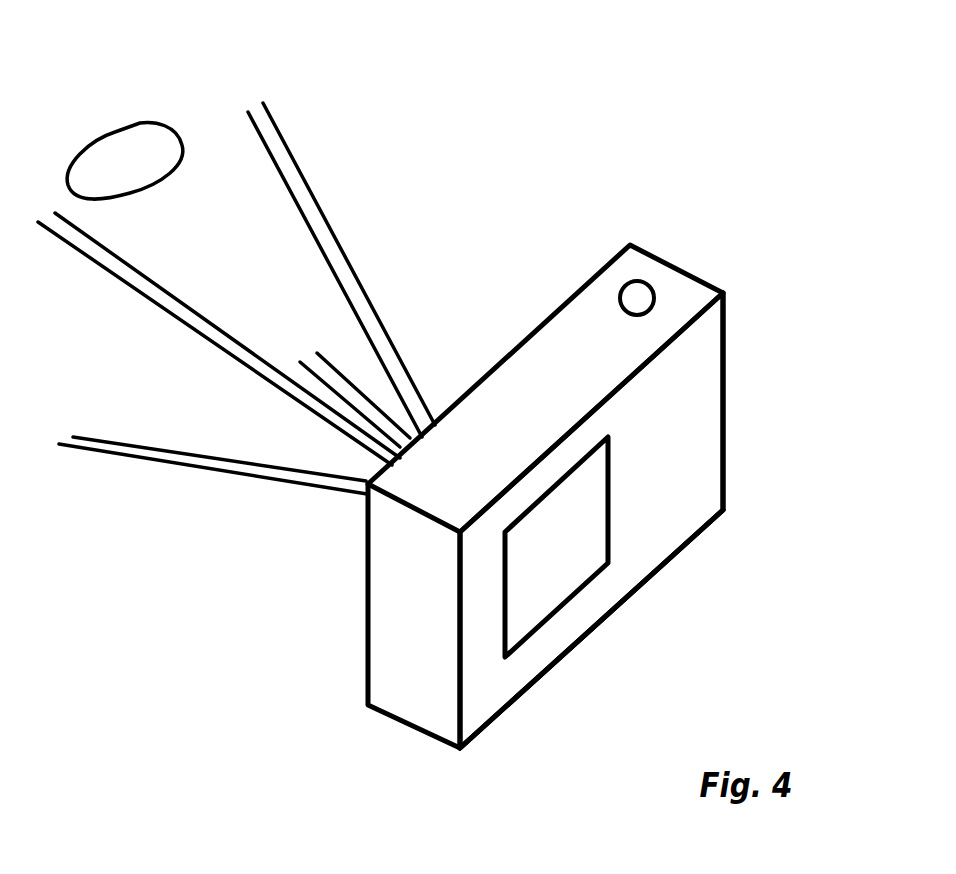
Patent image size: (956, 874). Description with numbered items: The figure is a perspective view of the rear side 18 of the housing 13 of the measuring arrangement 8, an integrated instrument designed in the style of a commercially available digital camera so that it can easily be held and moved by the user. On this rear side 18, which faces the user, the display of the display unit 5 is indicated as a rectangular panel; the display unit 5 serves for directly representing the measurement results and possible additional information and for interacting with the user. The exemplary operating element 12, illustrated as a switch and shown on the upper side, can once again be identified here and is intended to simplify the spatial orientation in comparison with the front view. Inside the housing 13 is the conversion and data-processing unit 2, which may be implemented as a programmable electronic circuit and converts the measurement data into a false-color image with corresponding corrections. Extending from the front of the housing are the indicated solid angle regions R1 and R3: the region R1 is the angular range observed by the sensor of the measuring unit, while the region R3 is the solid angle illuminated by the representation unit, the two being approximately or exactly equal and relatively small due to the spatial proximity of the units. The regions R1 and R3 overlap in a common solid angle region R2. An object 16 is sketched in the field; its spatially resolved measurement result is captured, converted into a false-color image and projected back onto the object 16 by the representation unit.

The conversion and data-processing unit 2 is at (605, 496).
The display unit 5 is at (567, 573).
The measuring arrangement 8 is at (653, 112).
The operating element 12 is at (645, 292).
The housing 13 is at (480, 710).
The object 16 is at (127, 148).
The rear side 18 is at (692, 524).
The solid angle region R1 is at (178, 402).
The common solid angle region R2 is at (332, 470).
The solid angle region R3 is at (262, 265).